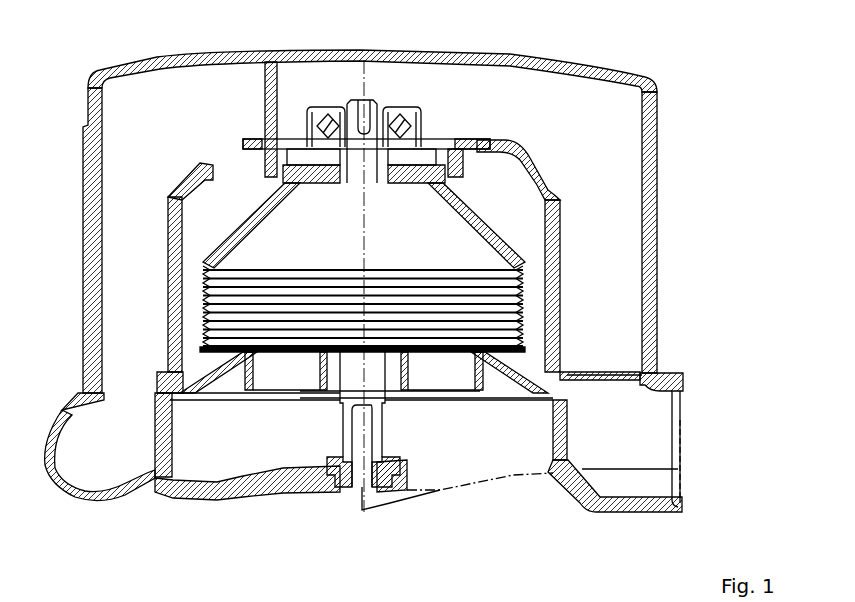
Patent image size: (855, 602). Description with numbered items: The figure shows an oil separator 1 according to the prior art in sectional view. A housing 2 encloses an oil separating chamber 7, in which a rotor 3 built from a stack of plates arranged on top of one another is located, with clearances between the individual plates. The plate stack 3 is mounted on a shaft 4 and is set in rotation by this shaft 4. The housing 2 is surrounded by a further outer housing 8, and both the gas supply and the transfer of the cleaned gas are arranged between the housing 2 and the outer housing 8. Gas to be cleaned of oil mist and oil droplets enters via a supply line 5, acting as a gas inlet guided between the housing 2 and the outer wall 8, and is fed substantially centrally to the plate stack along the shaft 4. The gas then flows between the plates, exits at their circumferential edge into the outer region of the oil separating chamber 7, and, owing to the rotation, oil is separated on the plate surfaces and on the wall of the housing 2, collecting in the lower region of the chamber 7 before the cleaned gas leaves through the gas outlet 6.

The oil separator 1 is at (707, 150).
The housing 2 is at (512, 162).
The rotor 3 is at (318, 244).
The shaft 4 is at (370, 143).
The supply line 5 is at (477, 88).
The gas outlet 6 is at (232, 158).
The oil separating chamber 7 is at (516, 218).
The outer housing 8 is at (95, 182).